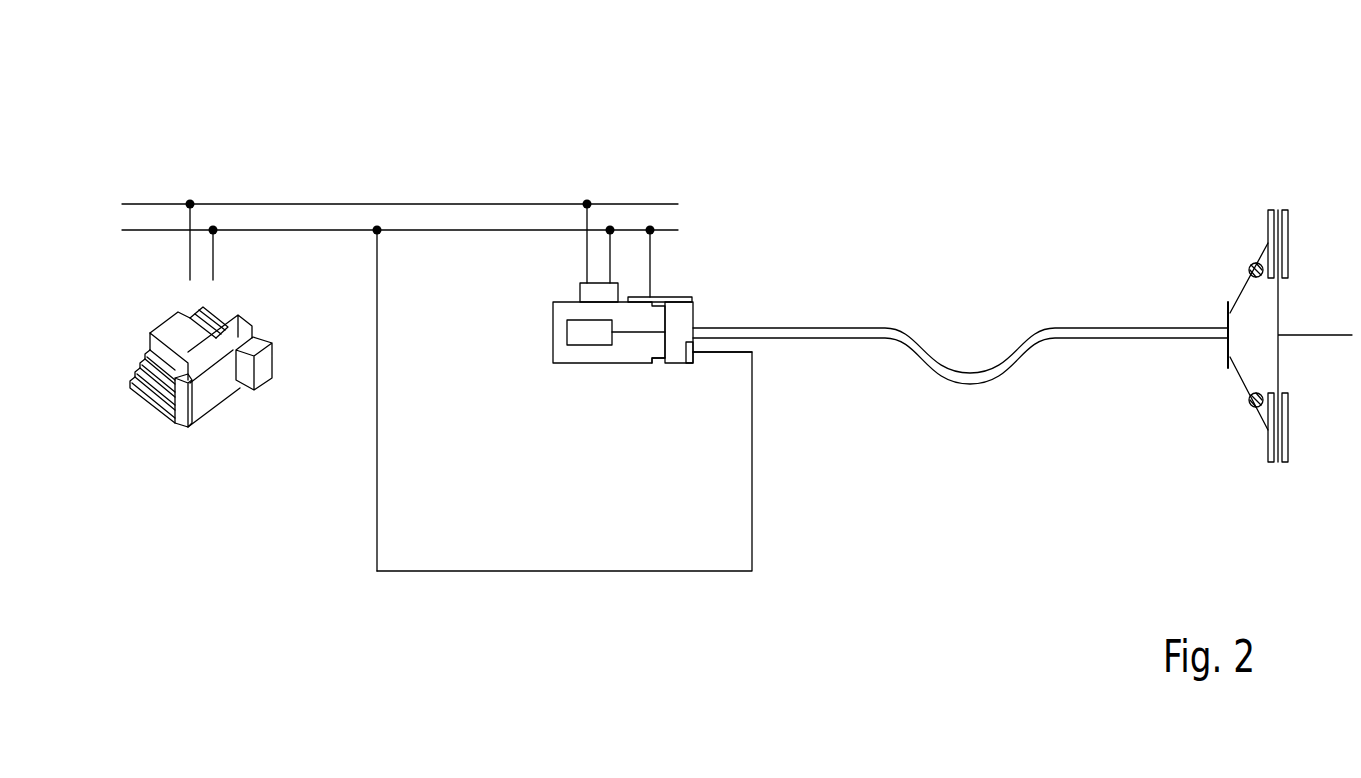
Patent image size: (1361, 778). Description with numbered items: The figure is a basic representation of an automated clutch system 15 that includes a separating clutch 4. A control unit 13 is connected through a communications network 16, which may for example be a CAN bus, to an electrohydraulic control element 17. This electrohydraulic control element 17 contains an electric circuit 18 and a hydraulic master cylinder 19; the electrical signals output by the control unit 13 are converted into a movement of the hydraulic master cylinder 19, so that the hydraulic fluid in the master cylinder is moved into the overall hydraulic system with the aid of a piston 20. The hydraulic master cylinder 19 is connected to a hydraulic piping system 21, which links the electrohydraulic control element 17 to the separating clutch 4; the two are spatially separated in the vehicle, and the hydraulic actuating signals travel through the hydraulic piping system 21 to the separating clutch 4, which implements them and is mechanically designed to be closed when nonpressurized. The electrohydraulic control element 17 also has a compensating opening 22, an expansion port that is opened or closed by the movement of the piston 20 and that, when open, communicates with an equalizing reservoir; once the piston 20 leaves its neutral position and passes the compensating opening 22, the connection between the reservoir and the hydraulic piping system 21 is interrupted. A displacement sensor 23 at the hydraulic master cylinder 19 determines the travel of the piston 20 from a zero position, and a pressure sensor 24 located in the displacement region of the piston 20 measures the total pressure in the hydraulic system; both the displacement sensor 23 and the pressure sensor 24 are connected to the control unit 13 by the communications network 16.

The separating clutch 4 is at (1286, 430).
The control unit 13 is at (217, 397).
The automated clutch system 15 is at (1040, 106).
The communications network 16 is at (316, 204).
The electrohydraulic control element 17 is at (519, 363).
The electric circuit 18 is at (585, 292).
The hydraulic master cylinder 19 is at (563, 367).
The piston 20 is at (668, 315).
The hydraulic piping system 21 is at (970, 381).
The compensating opening 22 is at (658, 367).
The displacement sensor 23 is at (663, 299).
The pressure sensor 24 is at (692, 367).